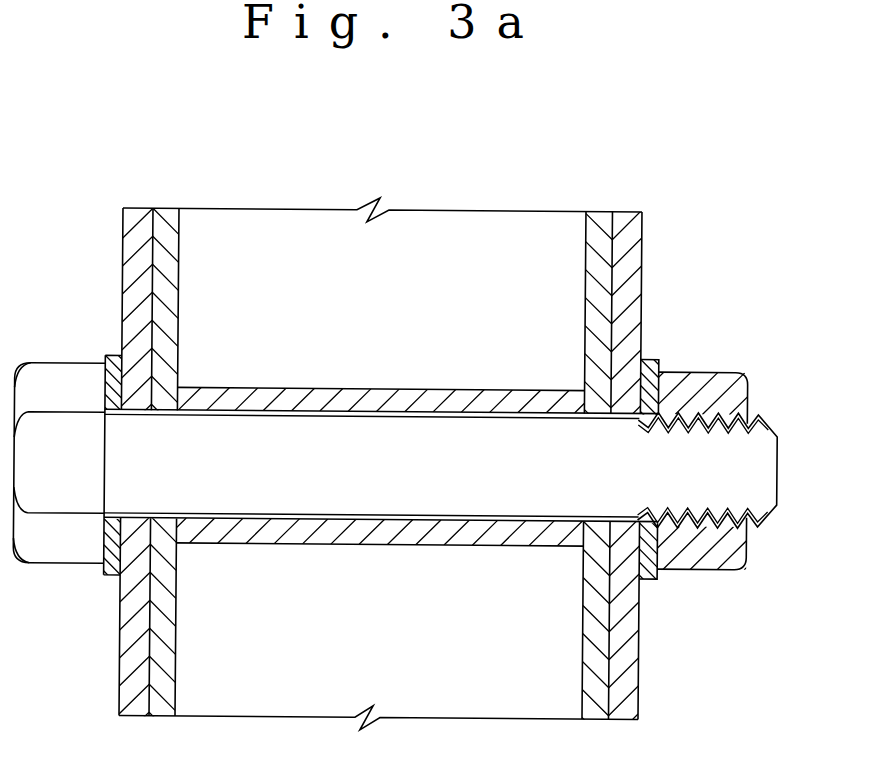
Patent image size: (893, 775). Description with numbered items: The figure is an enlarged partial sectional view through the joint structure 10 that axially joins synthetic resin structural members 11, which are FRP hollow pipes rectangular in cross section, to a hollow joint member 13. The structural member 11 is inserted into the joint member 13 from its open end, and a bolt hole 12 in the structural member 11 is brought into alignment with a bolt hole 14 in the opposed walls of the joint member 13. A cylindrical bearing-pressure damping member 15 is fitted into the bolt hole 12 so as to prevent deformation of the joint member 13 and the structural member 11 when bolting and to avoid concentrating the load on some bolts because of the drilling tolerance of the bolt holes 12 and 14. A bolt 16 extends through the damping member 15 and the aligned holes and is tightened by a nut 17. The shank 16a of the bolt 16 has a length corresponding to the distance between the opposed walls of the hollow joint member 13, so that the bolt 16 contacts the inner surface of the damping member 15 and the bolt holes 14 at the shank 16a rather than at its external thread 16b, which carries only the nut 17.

The joint structure 10 is at (597, 165).
The synthetic resin structural member 11 is at (590, 240).
The bolt hole of structural member 12 is at (600, 543).
The joint member 13 is at (623, 280).
The bolt hole of joint member 14 is at (137, 510).
The bearing-pressure damping member 15 is at (348, 400).
The bolt 16 is at (68, 373).
The shank 16a is at (375, 492).
The external thread 16b is at (696, 507).
The nut 17 is at (723, 380).